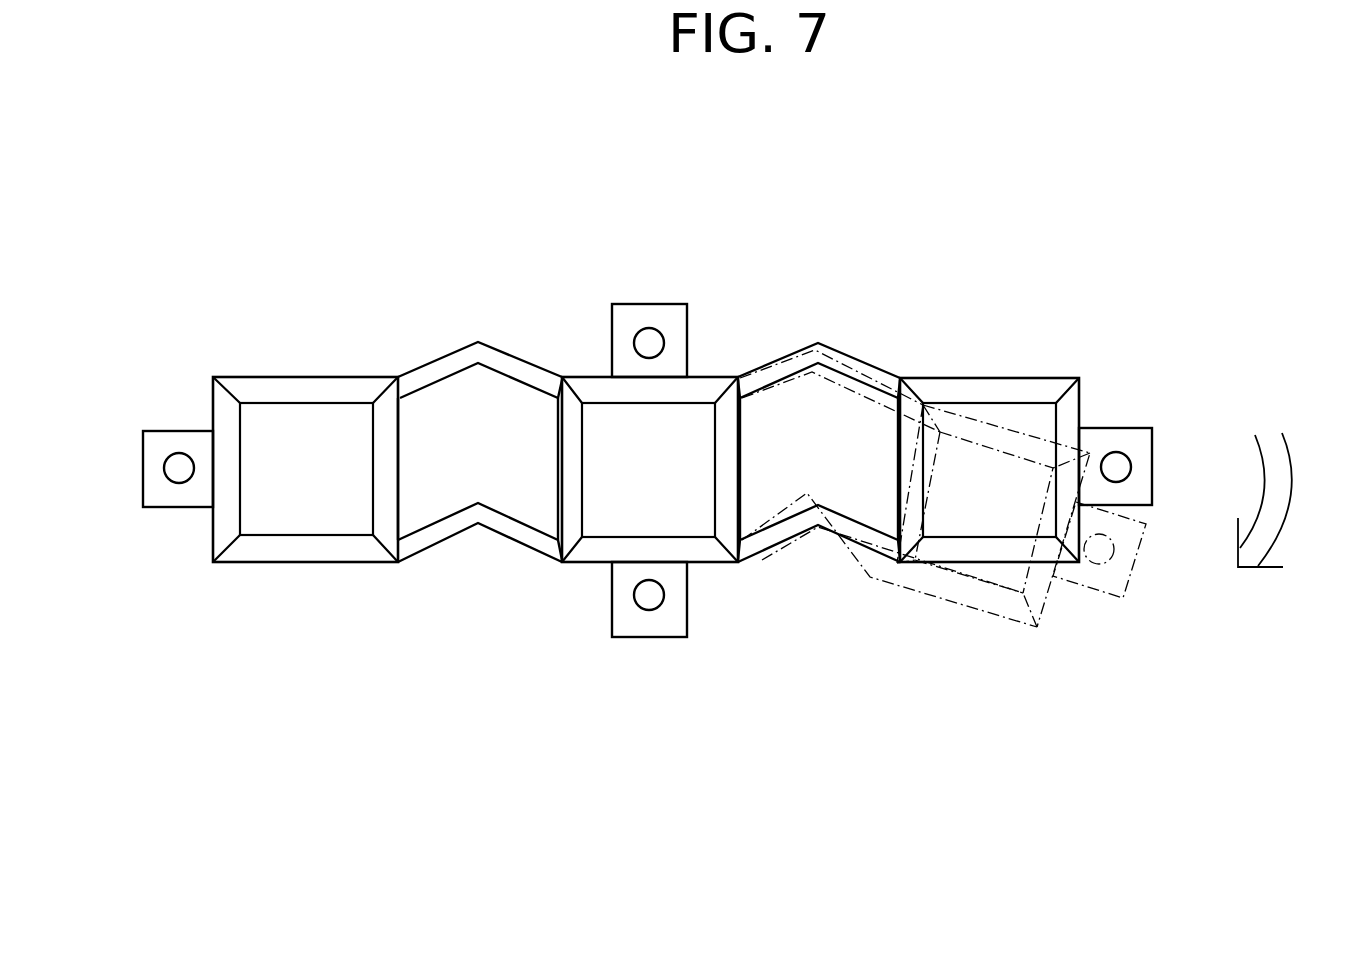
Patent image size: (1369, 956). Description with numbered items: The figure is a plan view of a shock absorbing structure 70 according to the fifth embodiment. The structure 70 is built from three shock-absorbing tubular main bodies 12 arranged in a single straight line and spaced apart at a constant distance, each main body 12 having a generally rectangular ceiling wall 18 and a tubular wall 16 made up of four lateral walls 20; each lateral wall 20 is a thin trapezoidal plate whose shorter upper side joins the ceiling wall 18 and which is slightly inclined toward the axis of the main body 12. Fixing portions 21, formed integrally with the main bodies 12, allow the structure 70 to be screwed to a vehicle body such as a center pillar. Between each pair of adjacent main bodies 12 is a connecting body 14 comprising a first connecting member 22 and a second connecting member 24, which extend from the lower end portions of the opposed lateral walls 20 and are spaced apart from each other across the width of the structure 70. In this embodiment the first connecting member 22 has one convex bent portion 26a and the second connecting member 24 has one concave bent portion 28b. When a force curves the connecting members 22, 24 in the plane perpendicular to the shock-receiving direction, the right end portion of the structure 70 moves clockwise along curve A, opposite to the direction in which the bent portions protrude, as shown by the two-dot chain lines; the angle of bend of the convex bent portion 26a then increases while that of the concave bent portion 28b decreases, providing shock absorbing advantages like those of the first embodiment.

The shock absorbing structure 70 is at (190, 335).
The shock-absorbing tubular main body 12 is at (212, 598).
The connecting body 14 is at (643, 482).
The tubular wall 16 is at (337, 580).
The ceiling wall 18 is at (268, 417).
The lateral wall 20 is at (284, 388).
The fixing portion 21 is at (158, 438).
The first connecting member 22 is at (649, 322).
The second connecting member 24 is at (643, 580).
The convex bent portion 26a is at (481, 350).
The concave bent portion 28b is at (475, 525).
The curve A is at (1297, 500).